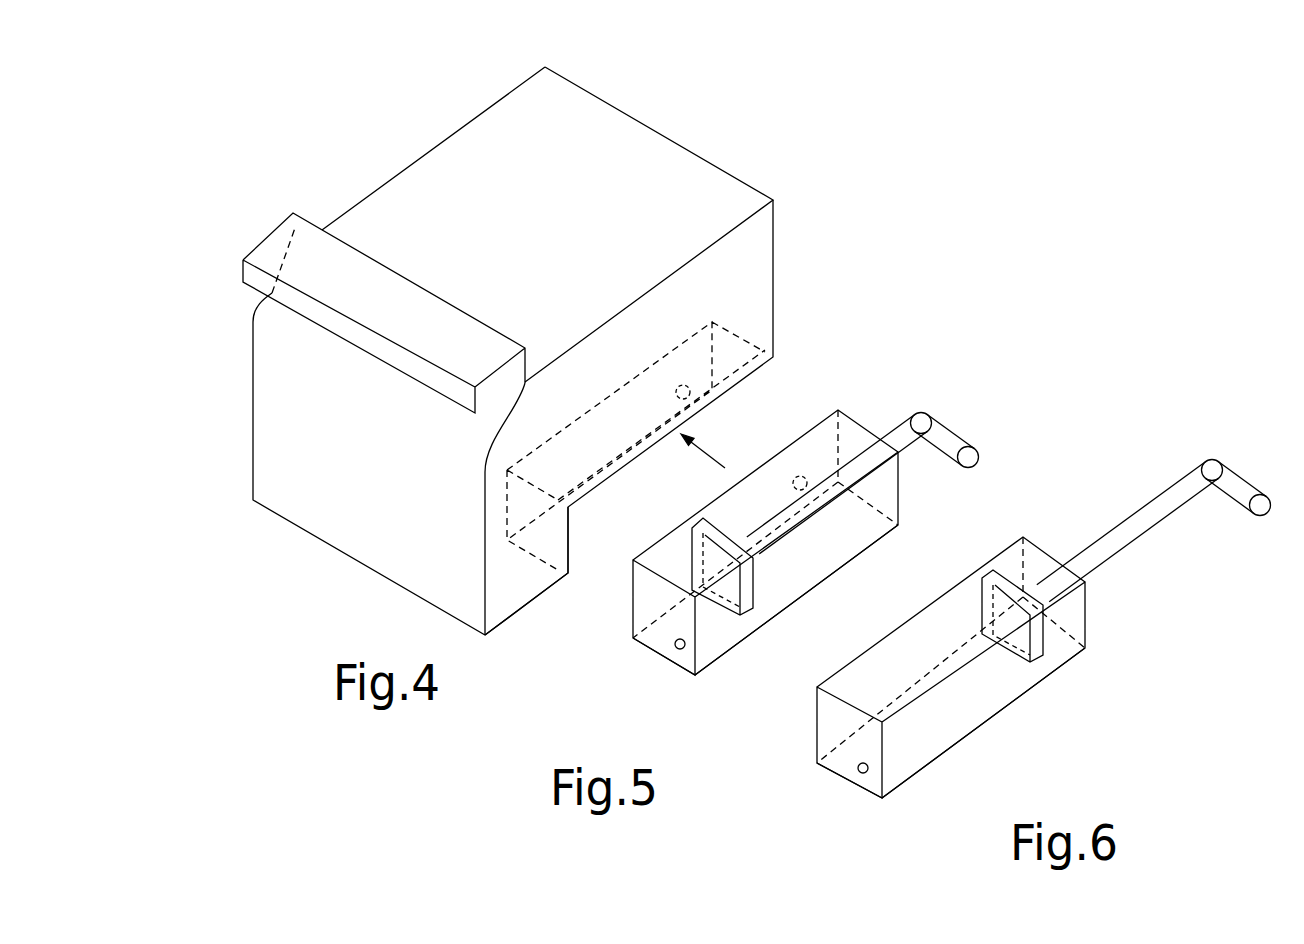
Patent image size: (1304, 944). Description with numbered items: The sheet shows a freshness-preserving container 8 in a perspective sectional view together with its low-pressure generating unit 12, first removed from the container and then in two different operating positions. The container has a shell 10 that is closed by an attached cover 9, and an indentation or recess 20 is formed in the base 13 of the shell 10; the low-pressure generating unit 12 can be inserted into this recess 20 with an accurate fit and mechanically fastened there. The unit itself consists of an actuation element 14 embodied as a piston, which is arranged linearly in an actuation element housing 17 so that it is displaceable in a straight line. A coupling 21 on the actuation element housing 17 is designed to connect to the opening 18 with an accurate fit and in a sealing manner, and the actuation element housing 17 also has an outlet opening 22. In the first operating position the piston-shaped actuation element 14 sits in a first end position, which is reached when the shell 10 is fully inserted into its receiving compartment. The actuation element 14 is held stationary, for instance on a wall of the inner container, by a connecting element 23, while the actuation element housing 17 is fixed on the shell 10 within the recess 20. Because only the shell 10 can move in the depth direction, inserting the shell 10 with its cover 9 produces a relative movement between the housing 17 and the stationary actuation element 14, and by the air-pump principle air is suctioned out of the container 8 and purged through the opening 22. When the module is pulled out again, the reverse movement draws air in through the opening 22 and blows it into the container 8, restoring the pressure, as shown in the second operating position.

In FIG. 4, the freshness-preserving container 8 is at (390, 141).
In FIG. 4, the cover 9 is at (623, 148).
In FIG. 4, the shell 10 is at (496, 373).
In FIG. 5, the low-pressure generating unit 12 is at (803, 545).
In FIG. 6, the low-pressure generating unit 12 is at (960, 704).
In FIG. 4, the base 13 is at (520, 600).
In FIG. 5, the actuation element 14 is at (866, 453).
In FIG. 6, the actuation element 14 is at (1154, 497).
In FIG. 5, the actuation element housing 17 is at (752, 653).
In FIG. 6, the actuation element housing 17 is at (960, 770).
In FIG. 4, the opening 18 is at (697, 379).
In FIG. 4, the recess 20 is at (744, 368).
In FIG. 5, the coupling 21 is at (816, 470).
In FIG. 5, the outlet opening 22 is at (676, 650).
In FIG. 6, the outlet opening 22 is at (860, 773).
In FIG. 5, the connecting element 23 is at (950, 437).
In FIG. 6, the connecting element 23 is at (1237, 487).